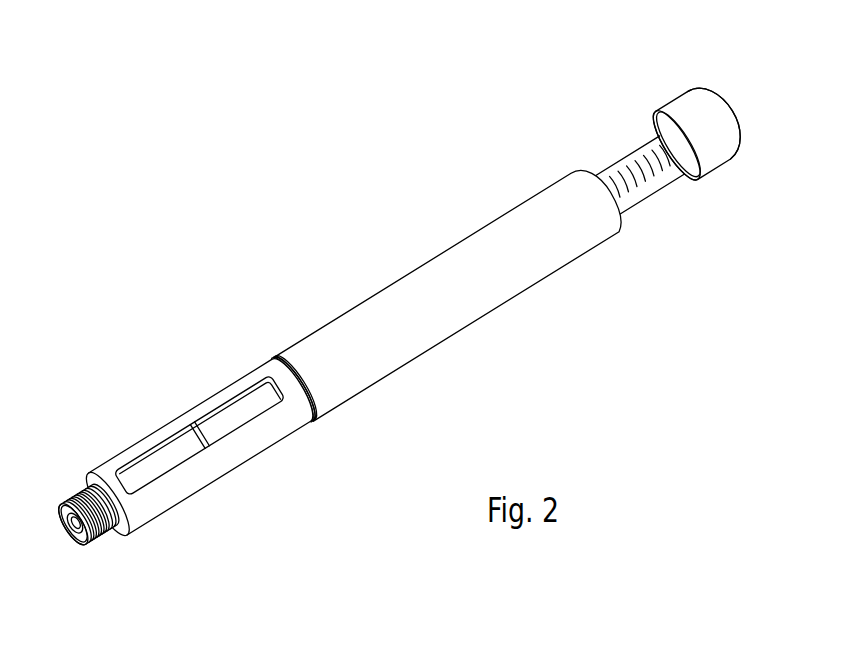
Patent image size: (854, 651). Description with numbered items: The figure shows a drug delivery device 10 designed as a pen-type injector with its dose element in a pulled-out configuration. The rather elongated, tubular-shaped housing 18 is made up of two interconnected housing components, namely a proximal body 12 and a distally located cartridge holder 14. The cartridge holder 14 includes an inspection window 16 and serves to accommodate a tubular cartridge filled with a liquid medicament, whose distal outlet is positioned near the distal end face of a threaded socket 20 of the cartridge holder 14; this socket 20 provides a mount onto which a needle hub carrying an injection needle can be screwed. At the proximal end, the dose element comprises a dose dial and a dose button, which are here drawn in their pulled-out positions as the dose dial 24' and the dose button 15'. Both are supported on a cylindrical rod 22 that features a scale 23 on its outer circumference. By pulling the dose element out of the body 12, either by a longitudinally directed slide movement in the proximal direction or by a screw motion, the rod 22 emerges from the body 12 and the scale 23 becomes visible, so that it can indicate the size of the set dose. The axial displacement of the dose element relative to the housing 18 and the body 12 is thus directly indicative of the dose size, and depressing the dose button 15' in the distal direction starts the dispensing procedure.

The drug delivery device 10 is at (423, 292).
The proximal body 12 is at (482, 247).
The cartridge holder 14 is at (160, 497).
The inspection window 16 is at (165, 458).
The housing 18 is at (280, 350).
The threaded socket 20 is at (68, 495).
The cylindrical rod 22 is at (612, 163).
The scale 23 is at (650, 172).
The dose dial in pulled-out configuration 24' is at (721, 86).
The dose button in pulled-out configuration 15' is at (726, 131).